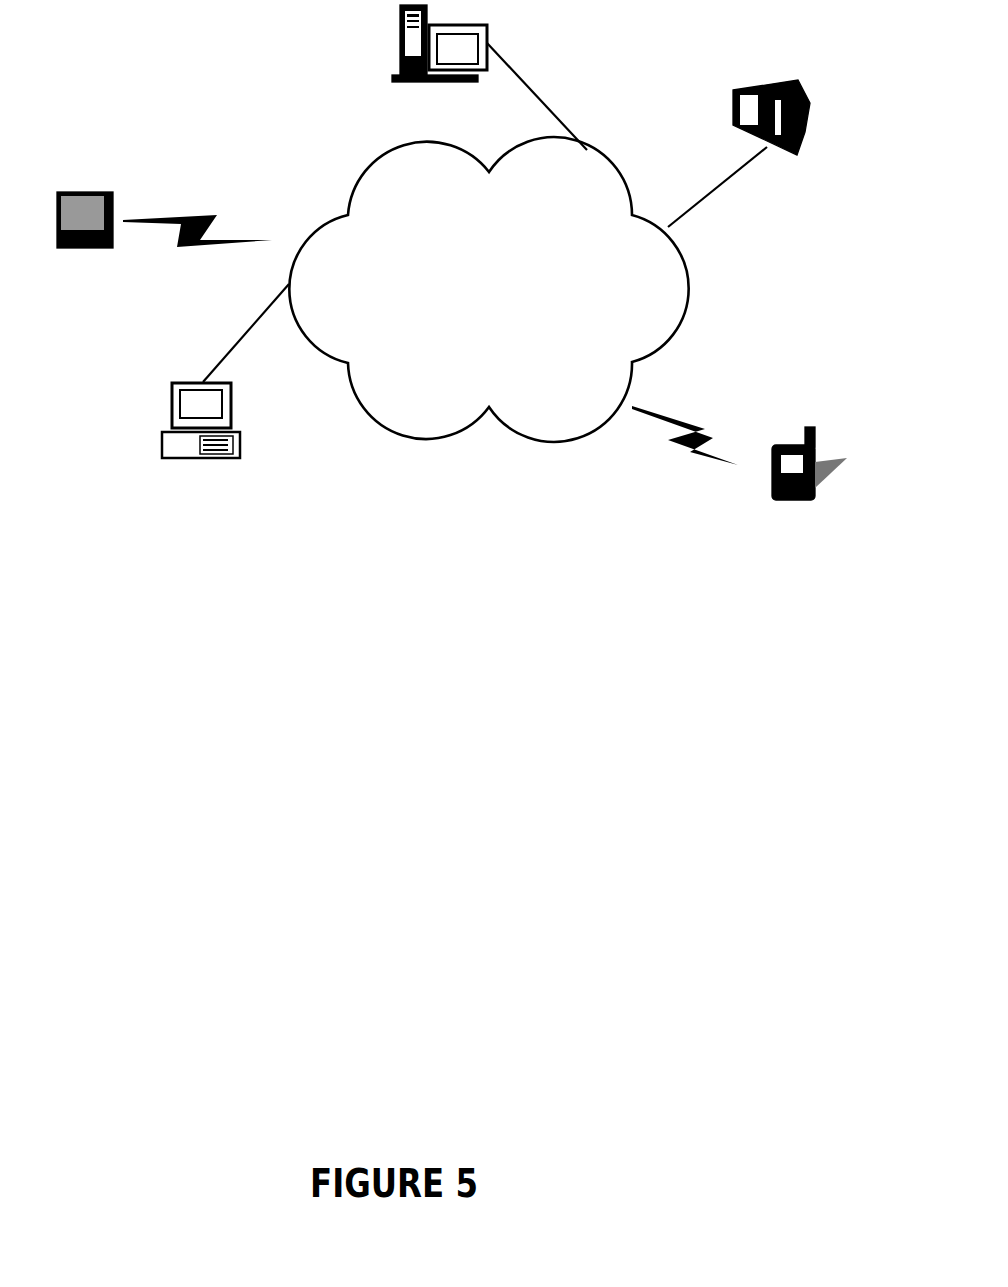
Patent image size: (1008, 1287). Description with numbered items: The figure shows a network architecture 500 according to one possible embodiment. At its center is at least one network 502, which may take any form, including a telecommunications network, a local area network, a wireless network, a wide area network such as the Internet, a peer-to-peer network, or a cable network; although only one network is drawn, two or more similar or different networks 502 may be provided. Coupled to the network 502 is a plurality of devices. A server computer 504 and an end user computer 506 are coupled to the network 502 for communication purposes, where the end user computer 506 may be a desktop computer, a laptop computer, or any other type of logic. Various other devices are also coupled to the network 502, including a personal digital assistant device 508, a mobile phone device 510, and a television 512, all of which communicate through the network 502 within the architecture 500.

The network architecture 500 is at (398, 738).
The network 502 is at (548, 440).
The server computer 504 is at (400, 45).
The end user computer 506 is at (162, 438).
The personal digital assistant (PDA) device 508 is at (85, 192).
The mobile phone device 510 is at (772, 446).
The television 512 is at (742, 78).